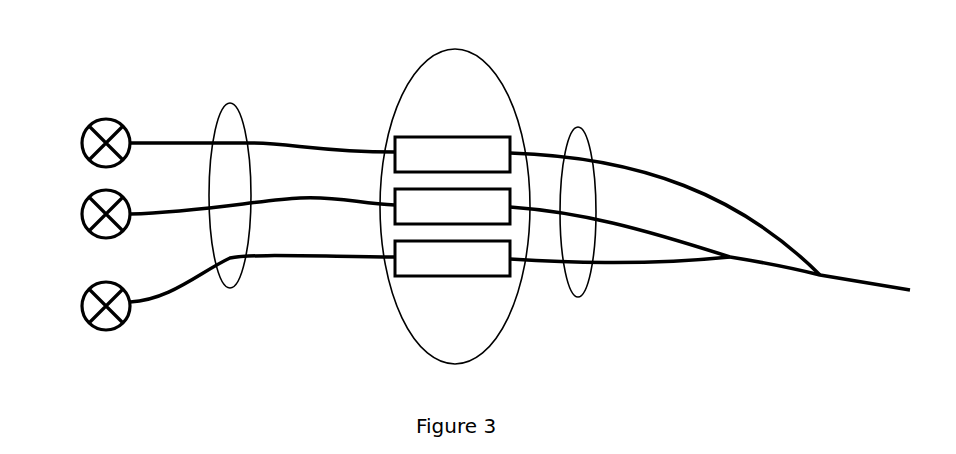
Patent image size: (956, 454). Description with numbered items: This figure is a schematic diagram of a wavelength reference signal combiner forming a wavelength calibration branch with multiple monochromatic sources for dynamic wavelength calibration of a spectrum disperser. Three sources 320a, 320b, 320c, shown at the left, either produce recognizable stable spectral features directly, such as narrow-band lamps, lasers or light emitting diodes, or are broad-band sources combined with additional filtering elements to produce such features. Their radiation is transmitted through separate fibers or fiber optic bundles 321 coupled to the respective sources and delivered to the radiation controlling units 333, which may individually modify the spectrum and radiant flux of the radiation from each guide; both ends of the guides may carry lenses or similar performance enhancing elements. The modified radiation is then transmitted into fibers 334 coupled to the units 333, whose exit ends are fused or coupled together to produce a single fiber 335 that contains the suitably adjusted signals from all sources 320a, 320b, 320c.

The source 320a is at (372, 293).
The source 320b is at (372, 223).
The source 320c is at (417, 197).
The fiber optic bundles 321 is at (230, 174).
The radiation controlling units 333 is at (455, 184).
The fibers 334 is at (578, 194).
The single fiber 335 is at (820, 289).